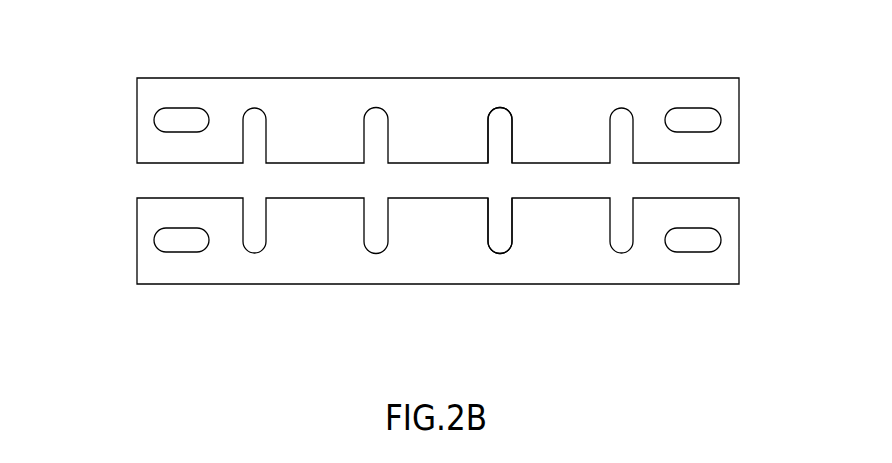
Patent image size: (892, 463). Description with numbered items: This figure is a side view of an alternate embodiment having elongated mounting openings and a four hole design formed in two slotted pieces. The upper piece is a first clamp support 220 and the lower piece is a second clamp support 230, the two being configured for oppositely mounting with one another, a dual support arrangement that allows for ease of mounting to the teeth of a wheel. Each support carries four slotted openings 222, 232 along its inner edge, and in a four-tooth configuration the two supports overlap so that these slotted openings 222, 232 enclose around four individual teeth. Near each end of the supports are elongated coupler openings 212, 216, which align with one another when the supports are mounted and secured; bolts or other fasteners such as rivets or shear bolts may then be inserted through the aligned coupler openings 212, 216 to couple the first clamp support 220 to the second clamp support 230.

The elongated coupler opening 212 is at (710, 121).
The elongated coupler opening 216 is at (165, 121).
The first clamp support 220 is at (687, 78).
The slotted opening 222 is at (498, 120).
The second clamp support 230 is at (687, 285).
The slotted opening 232 is at (500, 242).